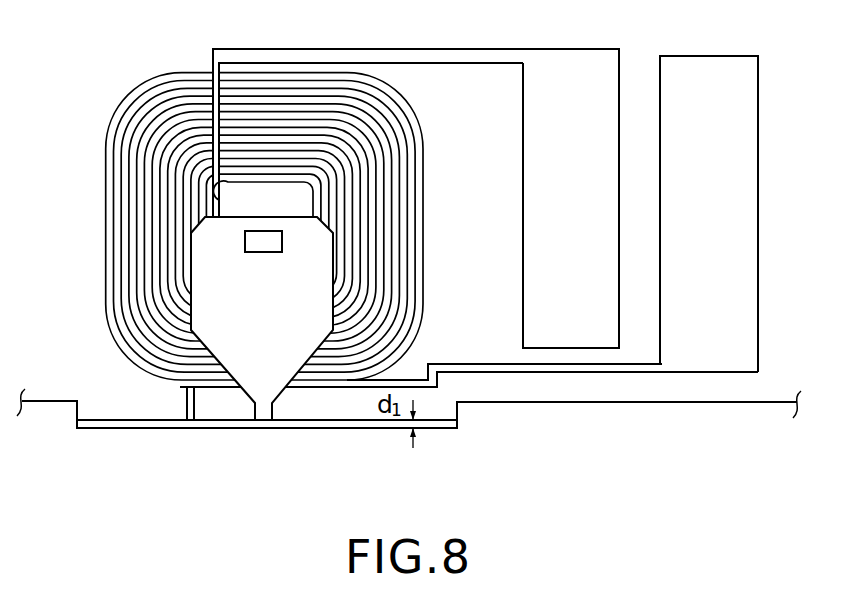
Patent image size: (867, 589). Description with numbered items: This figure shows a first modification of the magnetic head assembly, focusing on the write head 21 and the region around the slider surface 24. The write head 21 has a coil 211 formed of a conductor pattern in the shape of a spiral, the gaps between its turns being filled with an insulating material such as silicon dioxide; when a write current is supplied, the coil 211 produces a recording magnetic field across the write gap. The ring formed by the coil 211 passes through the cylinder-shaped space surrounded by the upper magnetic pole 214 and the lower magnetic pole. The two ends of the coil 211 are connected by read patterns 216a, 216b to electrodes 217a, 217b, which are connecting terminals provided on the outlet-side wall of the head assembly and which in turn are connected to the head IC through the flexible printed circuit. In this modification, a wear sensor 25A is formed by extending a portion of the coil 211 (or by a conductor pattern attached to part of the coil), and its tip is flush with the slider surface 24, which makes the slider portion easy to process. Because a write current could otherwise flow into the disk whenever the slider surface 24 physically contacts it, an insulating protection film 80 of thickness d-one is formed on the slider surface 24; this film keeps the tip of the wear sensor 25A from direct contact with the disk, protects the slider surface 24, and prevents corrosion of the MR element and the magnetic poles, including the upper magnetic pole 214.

The write head 21 is at (219, 197).
The coil 211 is at (147, 82).
The upper magnetic pole 214 is at (250, 390).
The read pattern 216a is at (457, 65).
The read pattern 216b is at (460, 363).
The electrode 217a is at (586, 23).
The electrode 217b is at (725, 30).
The slider surface 24 is at (433, 423).
The wear sensor 25A is at (187, 412).
The insulating protection film 80 is at (103, 430).